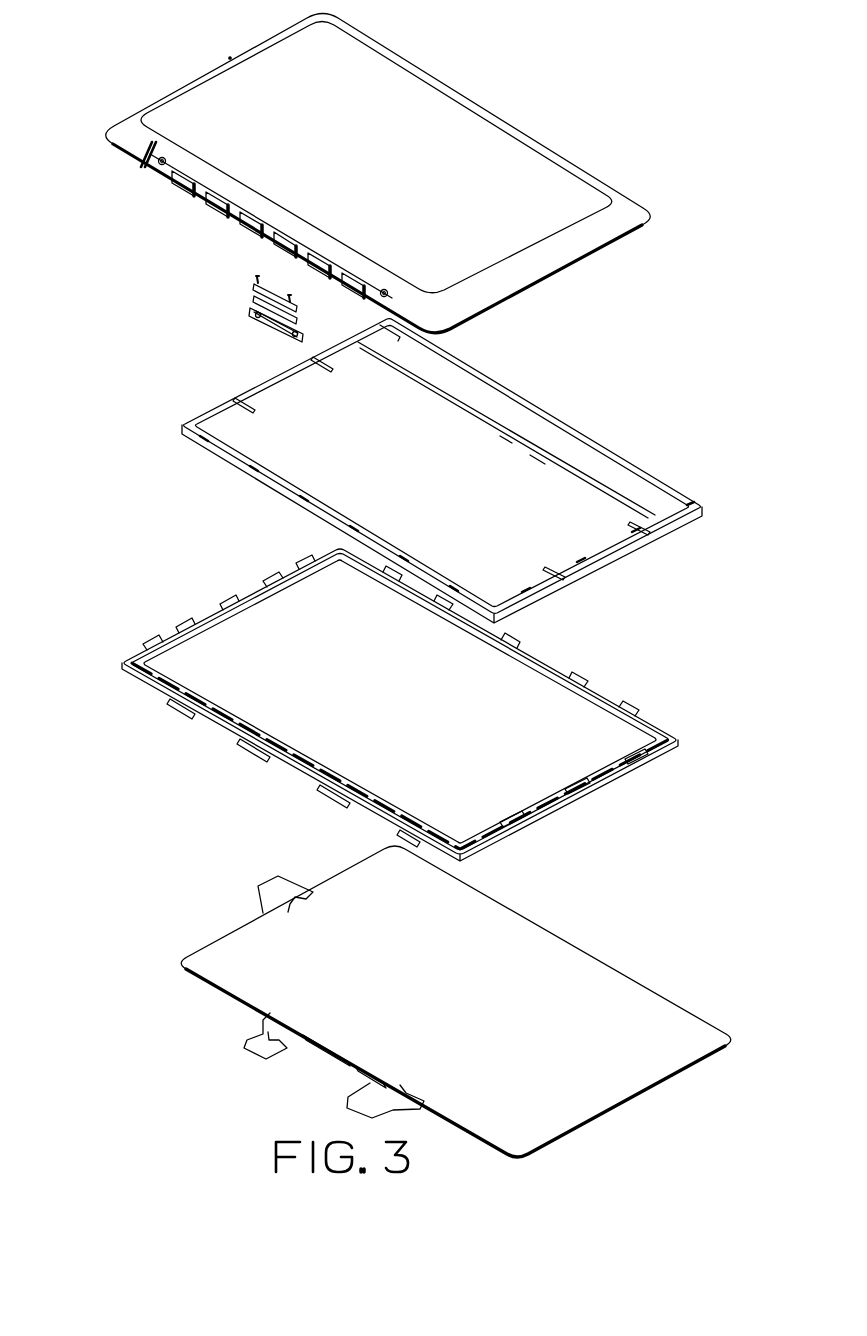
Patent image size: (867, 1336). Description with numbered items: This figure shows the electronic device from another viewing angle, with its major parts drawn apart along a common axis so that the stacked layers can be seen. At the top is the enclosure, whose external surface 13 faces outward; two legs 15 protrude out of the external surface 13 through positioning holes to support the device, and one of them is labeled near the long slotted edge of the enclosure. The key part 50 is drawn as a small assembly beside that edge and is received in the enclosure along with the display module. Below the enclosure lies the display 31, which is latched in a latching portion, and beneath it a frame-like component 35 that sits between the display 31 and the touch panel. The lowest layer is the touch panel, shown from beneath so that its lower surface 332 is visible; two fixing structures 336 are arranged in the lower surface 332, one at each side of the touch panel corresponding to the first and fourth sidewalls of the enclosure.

The external surface 13 is at (628, 212).
The legs 15 is at (136, 151).
The key part 50 is at (250, 288).
The display 31 is at (608, 485).
The second frame 35 is at (625, 700).
The lower surface 332 is at (600, 995).
The fixing structures 336 is at (263, 913).